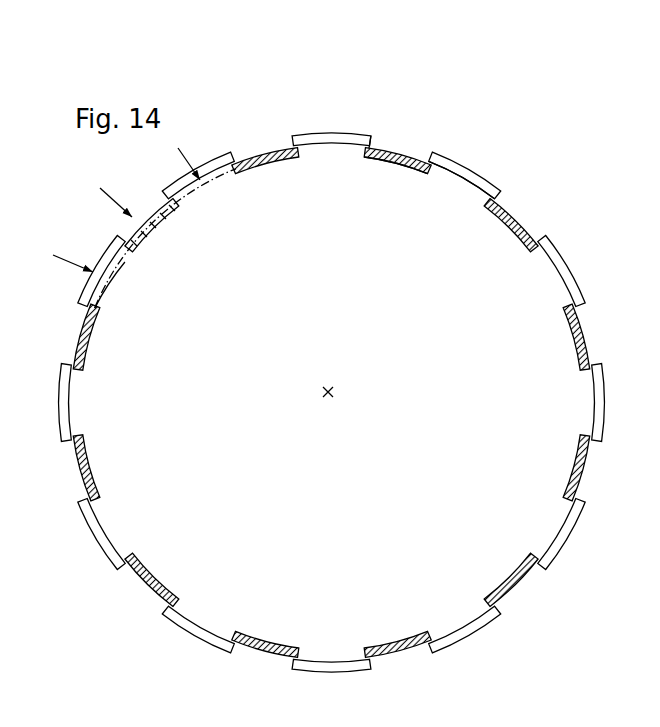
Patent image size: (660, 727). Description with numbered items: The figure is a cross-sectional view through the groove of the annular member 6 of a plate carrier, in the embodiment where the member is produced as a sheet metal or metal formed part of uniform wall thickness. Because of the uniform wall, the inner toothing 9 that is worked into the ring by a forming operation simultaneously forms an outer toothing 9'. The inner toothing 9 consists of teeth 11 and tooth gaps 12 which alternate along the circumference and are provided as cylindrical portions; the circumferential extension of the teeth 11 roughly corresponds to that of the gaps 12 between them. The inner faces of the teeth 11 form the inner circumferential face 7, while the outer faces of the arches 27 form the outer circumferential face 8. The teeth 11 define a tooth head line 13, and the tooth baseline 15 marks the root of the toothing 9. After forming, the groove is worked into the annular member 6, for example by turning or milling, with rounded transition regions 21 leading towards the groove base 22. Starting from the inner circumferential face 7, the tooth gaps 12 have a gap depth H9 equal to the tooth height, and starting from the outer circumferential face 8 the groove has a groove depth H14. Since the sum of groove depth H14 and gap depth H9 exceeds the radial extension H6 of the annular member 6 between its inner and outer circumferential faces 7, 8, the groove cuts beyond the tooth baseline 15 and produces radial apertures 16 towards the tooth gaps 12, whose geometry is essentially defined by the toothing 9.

The annular member 6 is at (326, 104).
The groove base 22 is at (367, 142).
The outer toothing 9' is at (410, 116).
The toothing 9 is at (391, 235).
The outer circumferential face 8 is at (472, 165).
The rounded transition region 21 is at (481, 182).
The inner circumferential face 7 is at (503, 233).
The arch 27 is at (597, 399).
The tooth head line 13 is at (92, 350).
The tooth baseline 15 is at (70, 405).
The tooth 11 is at (90, 468).
The tooth gap 12 is at (106, 527).
The radial aperture 16 is at (199, 620).
The groove depth H14 is at (151, 236).
The gap depth H9 is at (206, 198).
The radial extension H6 is at (119, 284).